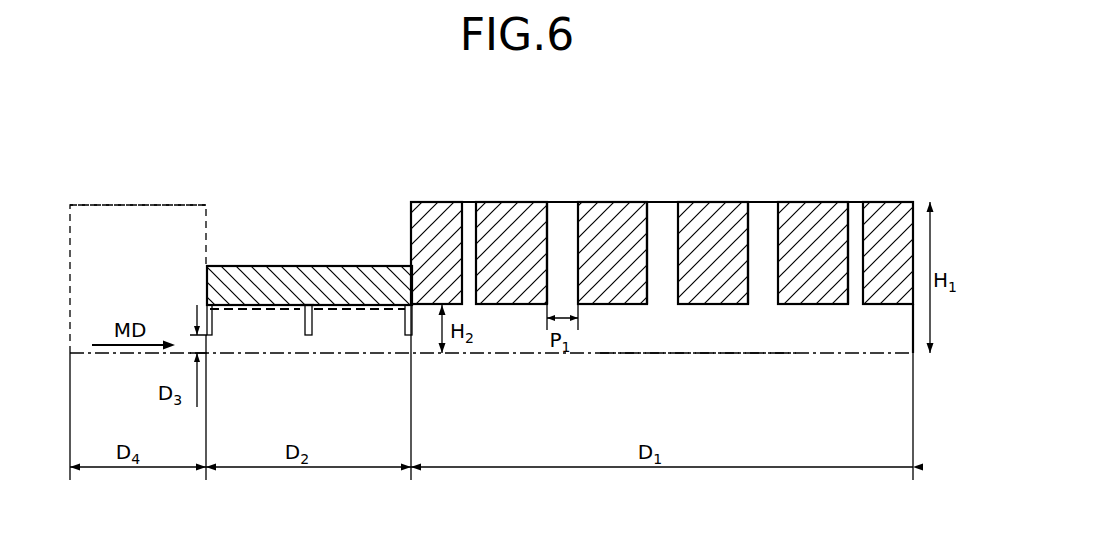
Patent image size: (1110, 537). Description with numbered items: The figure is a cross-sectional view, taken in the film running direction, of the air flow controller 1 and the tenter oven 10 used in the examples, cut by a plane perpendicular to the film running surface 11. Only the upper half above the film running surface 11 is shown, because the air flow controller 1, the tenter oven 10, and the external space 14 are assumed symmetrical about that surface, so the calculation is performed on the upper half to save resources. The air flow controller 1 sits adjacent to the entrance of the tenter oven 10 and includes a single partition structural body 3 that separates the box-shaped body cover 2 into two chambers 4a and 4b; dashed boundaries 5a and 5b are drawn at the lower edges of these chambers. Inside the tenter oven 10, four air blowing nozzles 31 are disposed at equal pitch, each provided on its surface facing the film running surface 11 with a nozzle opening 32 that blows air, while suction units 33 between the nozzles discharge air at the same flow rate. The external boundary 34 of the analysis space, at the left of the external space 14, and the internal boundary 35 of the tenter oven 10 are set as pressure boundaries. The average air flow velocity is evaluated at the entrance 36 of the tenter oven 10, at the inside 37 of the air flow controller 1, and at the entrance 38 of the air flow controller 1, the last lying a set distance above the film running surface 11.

The air flow controller 1 is at (265, 148).
The box-shaped body cover 2 is at (232, 266).
The partition structural body 3 is at (307, 300).
The chamber 4a is at (242, 324).
The chamber 4b is at (383, 324).
The first boundary 5a is at (267, 308).
The second boundary 5b is at (357, 308).
The tenter oven 10 is at (411, 202).
The film running surface 11 is at (718, 357).
The external space 14 is at (170, 237).
The air blowing nozzle 31 is at (498, 213).
The nozzle opening 32 is at (523, 303).
The suction unit 33 is at (469, 202).
The external boundary 34 is at (71, 233).
The internal boundary 35 is at (913, 327).
The entrance of the tenter oven 36 is at (405, 337).
The inside of the air flow controller 37 is at (311, 337).
The entrance of the air flow controller 38 is at (212, 337).